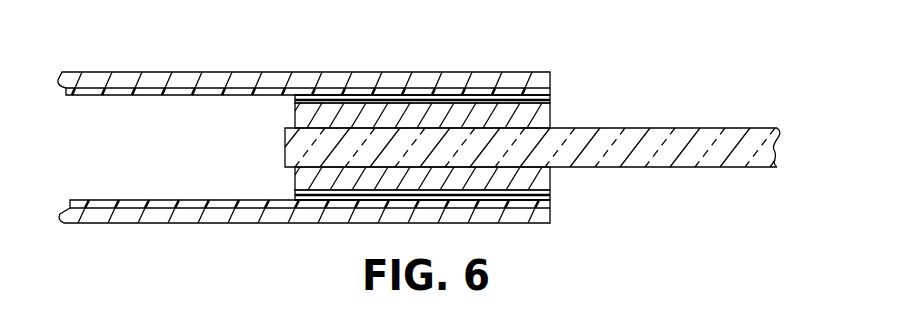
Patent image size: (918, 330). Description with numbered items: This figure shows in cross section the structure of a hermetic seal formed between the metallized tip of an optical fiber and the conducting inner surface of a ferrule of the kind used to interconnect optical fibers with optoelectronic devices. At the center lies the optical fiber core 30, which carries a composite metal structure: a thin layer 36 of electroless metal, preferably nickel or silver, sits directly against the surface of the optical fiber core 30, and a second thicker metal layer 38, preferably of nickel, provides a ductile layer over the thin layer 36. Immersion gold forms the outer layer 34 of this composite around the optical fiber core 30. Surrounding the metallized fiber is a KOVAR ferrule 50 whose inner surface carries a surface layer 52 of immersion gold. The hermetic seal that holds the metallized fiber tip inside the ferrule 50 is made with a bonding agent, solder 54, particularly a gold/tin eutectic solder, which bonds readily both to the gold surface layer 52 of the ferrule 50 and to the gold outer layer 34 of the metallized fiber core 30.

The optical fiber core 30 is at (690, 131).
The outer layer 34 is at (552, 100).
The thin layer of electroless metal 36 is at (553, 126).
The second thicker metal layer 38 is at (431, 150).
The ferrule 50 is at (545, 72).
The surface layer 52 is at (161, 96).
The solder 54 is at (293, 100).